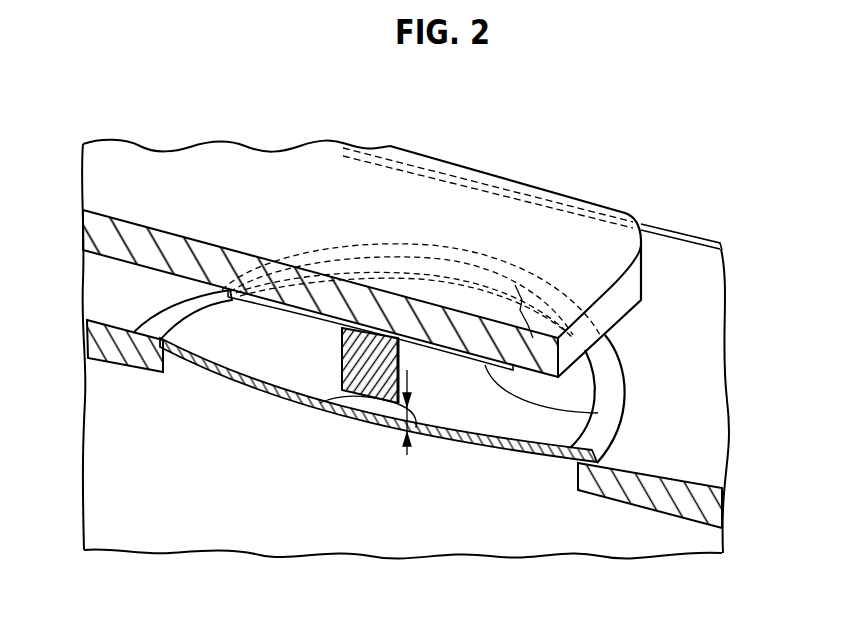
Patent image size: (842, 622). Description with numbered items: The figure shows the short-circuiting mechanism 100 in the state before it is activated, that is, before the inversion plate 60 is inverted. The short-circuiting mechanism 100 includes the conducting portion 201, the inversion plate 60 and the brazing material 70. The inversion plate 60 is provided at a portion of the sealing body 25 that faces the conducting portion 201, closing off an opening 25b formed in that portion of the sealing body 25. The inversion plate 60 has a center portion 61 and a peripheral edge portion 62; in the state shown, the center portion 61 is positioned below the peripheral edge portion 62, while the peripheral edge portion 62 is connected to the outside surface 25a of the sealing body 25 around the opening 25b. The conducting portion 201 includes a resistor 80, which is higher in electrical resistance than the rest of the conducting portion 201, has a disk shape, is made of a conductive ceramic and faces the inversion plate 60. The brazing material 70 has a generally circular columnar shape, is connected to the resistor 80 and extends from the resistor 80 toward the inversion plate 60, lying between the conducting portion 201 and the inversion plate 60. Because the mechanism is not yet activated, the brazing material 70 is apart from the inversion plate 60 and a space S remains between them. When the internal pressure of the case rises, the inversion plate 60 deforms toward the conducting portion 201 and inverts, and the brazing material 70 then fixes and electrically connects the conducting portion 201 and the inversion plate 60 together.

The short-circuiting mechanism 100 is at (730, 183).
The conducting portion 201 is at (507, 243).
The sealing body 25 is at (668, 351).
The outside surface 25a is at (622, 447).
The opening 25b is at (575, 473).
The peripheral edge portion 62 is at (155, 327).
The center portion 61 is at (372, 420).
The brazing material 70 is at (363, 372).
The inversion plate 60 is at (484, 448).
The space S is at (407, 455).
The resistor 80 is at (598, 413).